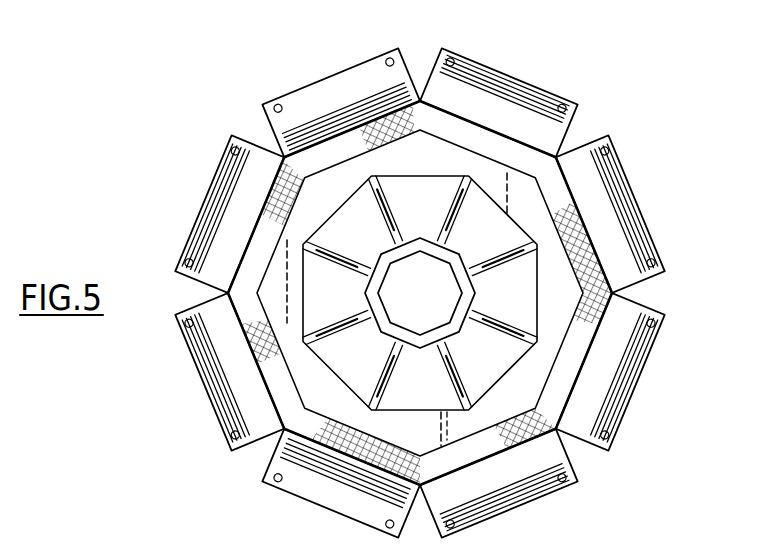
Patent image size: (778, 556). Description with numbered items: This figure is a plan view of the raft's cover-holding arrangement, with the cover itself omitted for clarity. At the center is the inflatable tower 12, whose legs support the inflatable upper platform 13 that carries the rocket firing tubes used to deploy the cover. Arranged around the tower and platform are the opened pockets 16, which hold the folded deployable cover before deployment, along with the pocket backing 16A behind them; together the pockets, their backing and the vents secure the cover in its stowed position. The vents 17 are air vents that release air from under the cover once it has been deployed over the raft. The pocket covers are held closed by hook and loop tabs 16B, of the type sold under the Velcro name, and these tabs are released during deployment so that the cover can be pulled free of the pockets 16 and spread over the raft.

The inflatable tower 12 is at (478, 311).
The inflatable upper platform 13 is at (457, 249).
The pocket 16 is at (647, 358).
The pocket backing 16A is at (348, 170).
The hook and loop tab 16B is at (405, 58).
The vent 17 is at (590, 243).